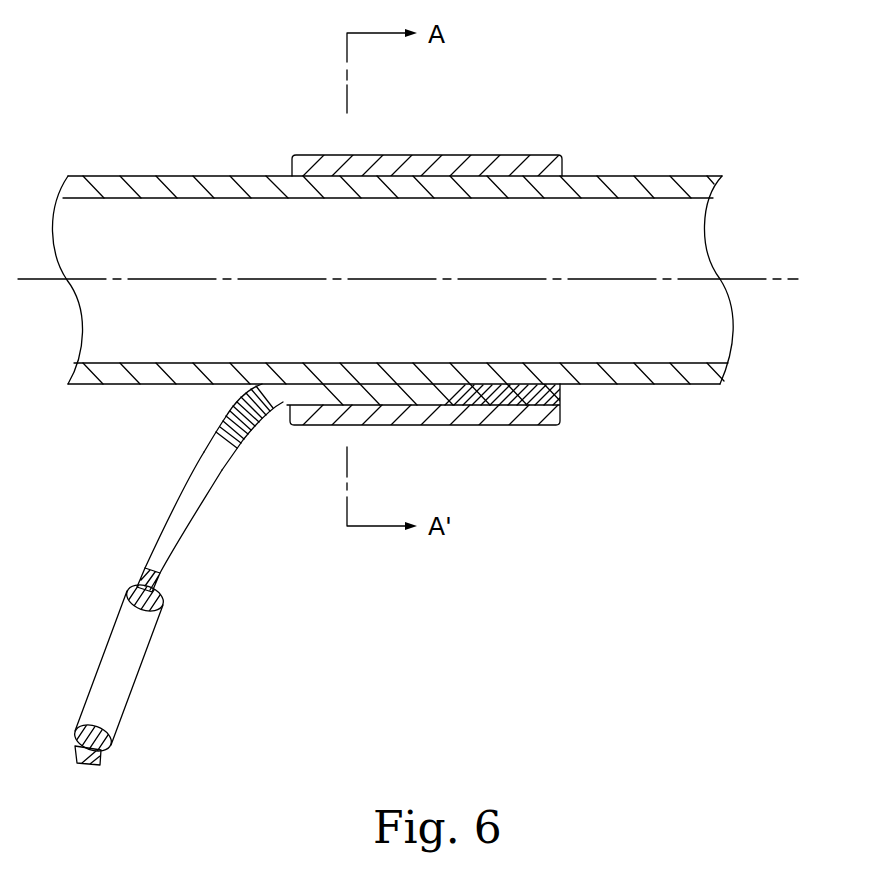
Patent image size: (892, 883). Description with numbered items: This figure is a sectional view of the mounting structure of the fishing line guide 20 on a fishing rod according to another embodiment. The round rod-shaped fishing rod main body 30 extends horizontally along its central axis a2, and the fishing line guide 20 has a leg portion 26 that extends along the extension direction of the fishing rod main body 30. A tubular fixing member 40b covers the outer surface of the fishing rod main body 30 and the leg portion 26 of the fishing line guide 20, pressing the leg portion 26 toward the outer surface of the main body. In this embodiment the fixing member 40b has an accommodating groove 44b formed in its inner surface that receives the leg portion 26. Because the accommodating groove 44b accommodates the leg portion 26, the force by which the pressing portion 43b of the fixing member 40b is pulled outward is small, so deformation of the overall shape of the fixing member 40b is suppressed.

The fishing line guide 20 is at (162, 512).
The leg portion 26 is at (279, 402).
The fishing rod main body 30 is at (133, 176).
The fixing member 40b is at (543, 155).
The pressing portion 43b is at (367, 427).
The accommodating groove 44b is at (462, 387).
The central axis a2 is at (427, 279).